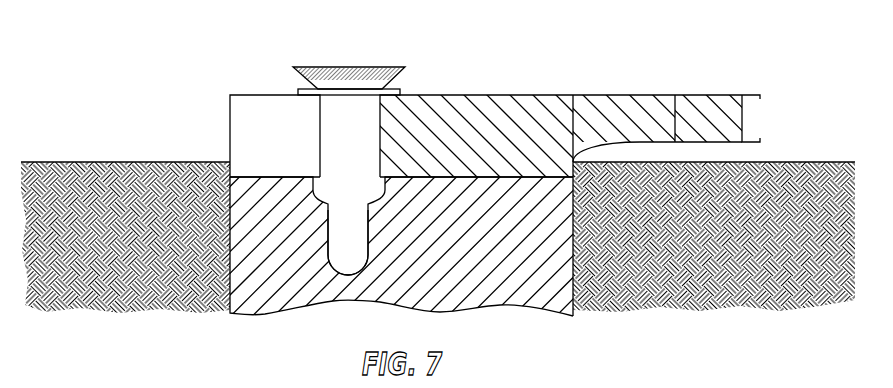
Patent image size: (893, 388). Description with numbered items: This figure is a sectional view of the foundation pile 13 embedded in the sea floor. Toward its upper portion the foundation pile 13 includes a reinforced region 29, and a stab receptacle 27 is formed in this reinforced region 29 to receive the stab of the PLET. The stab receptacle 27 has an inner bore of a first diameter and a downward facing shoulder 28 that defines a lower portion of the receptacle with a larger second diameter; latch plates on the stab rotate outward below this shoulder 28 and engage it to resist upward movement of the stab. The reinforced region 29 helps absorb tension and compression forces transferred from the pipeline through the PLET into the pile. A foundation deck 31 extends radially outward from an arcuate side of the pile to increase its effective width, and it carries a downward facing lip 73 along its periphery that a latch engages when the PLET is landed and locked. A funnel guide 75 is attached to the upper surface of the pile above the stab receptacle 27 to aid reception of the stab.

The foundation pile 13 is at (230, 195).
The reinforced region 29 is at (230, 123).
The foundation deck 31 is at (628, 95).
The downward facing lip 73 is at (752, 97).
The stab receptacle 27 is at (312, 193).
The downward facing shoulder 28 is at (349, 198).
The funnel guide 75 is at (347, 73).